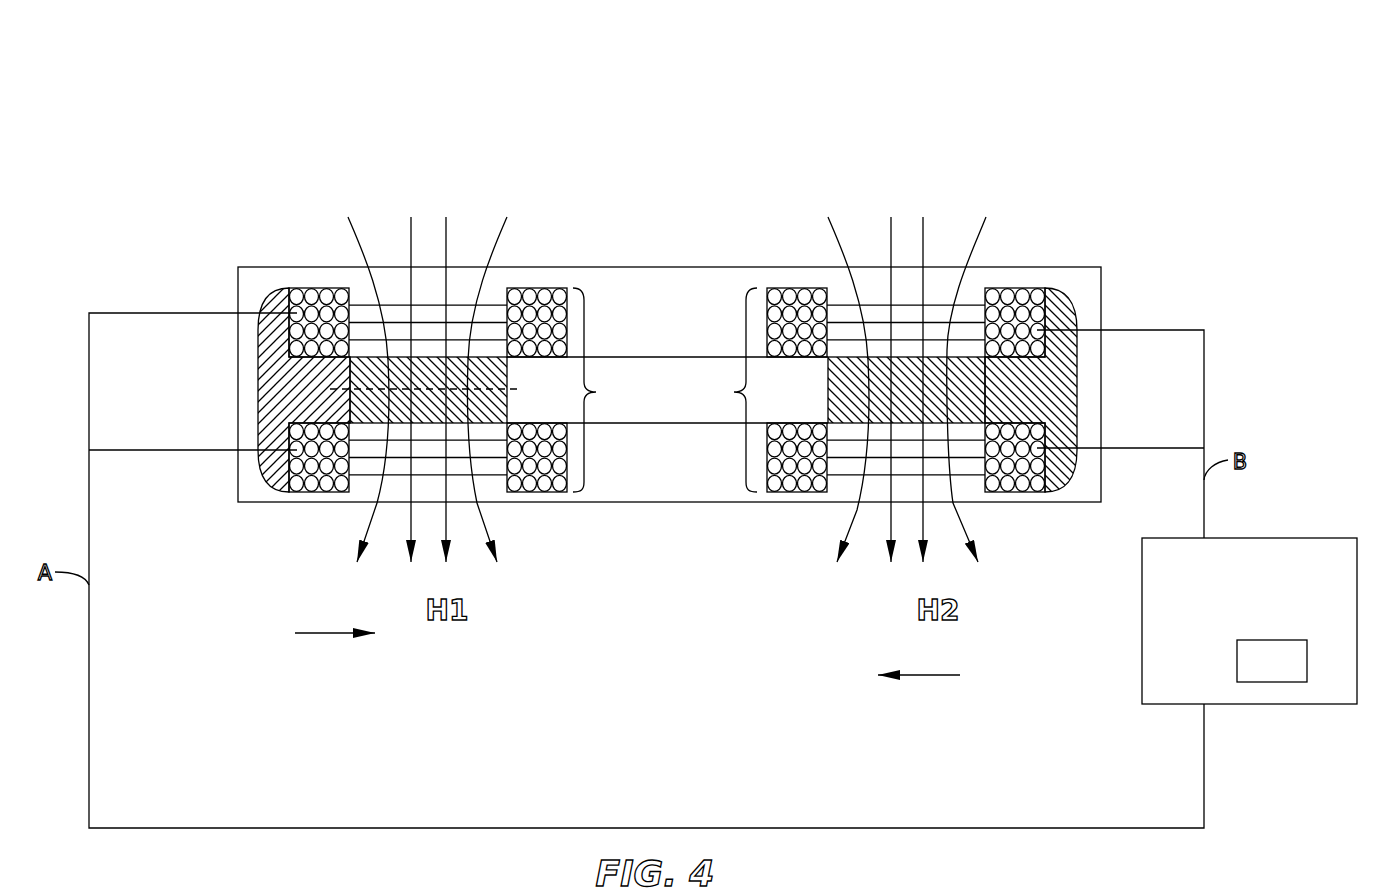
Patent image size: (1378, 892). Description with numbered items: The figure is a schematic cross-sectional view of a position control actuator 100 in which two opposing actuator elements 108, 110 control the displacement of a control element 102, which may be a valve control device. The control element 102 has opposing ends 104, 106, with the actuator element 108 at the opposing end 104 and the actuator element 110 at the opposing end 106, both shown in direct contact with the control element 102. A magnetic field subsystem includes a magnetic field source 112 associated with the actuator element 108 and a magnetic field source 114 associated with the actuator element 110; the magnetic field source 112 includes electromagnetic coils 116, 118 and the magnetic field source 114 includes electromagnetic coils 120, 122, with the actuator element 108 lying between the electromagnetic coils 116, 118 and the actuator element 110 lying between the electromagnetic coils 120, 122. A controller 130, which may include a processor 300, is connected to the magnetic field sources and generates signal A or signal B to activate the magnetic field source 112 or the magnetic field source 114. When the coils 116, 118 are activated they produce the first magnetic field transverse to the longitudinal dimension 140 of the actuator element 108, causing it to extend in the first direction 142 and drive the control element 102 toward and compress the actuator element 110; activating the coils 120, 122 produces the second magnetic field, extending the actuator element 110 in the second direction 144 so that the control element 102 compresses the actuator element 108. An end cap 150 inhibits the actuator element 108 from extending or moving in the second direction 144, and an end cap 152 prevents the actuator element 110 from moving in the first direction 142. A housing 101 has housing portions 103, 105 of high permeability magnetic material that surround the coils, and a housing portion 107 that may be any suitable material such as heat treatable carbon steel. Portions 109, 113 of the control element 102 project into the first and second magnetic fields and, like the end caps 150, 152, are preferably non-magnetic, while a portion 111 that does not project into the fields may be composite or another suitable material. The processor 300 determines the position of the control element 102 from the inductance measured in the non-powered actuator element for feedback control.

The position control actuator 100 is at (1043, 89).
The housing 101 is at (948, 358).
The control element 102 is at (679, 425).
The housing portion 103 is at (276, 257).
The opposing end 104 is at (483, 357).
The housing portion 105 is at (1040, 238).
The opposing end 106 is at (835, 365).
The housing portion 107 is at (692, 511).
The actuator element 108 is at (374, 362).
The control element portion 109 is at (517, 491).
The actuator element 110 is at (960, 378).
The control element portion 111 is at (672, 346).
The magnetic field source 112 is at (605, 390).
The control element portion 113 is at (818, 407).
The magnetic field source 114 is at (725, 390).
The electromagnetic coil 116 is at (297, 326).
The electromagnetic coil 118 is at (297, 479).
The electromagnetic coil 120 is at (790, 292).
The electromagnetic coil 122 is at (790, 492).
The controller 130 is at (1210, 610).
The longitudinal dimension 140 is at (444, 389).
The first direction 142 is at (337, 633).
The second direction 144 is at (907, 675).
The end cap 150 is at (270, 385).
The end cap 152 is at (1057, 393).
The processor 300 is at (1272, 661).